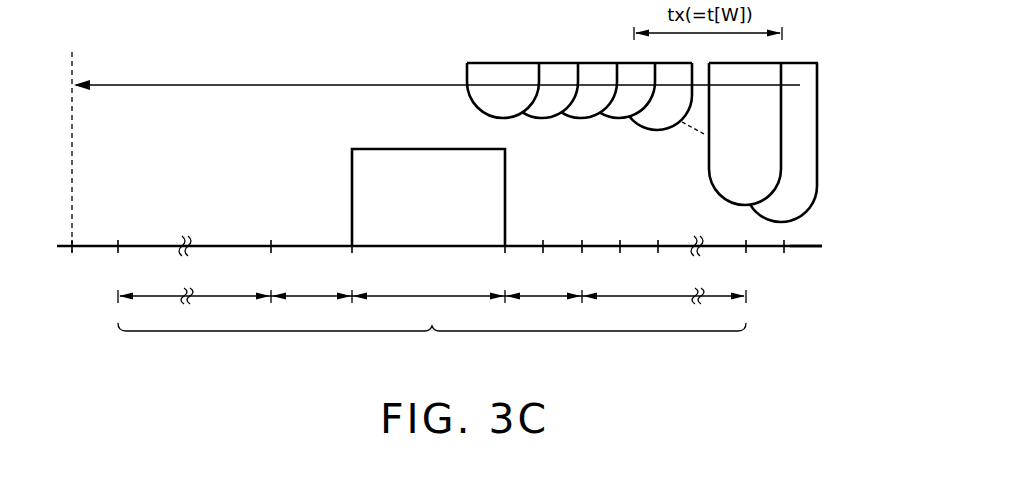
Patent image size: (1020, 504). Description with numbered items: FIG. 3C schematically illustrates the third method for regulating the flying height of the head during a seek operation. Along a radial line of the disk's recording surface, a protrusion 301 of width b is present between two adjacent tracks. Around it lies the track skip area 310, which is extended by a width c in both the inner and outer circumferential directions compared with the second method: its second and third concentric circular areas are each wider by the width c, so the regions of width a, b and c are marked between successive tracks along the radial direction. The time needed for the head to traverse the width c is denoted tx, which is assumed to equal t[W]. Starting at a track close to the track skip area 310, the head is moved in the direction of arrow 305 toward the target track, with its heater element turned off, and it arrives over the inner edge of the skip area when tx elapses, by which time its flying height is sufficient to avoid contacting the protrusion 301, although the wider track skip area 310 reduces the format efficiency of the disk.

The arrow 305 is at (208, 85).
The protrusion 301 is at (352, 193).
The track skip area 310 is at (432, 327).